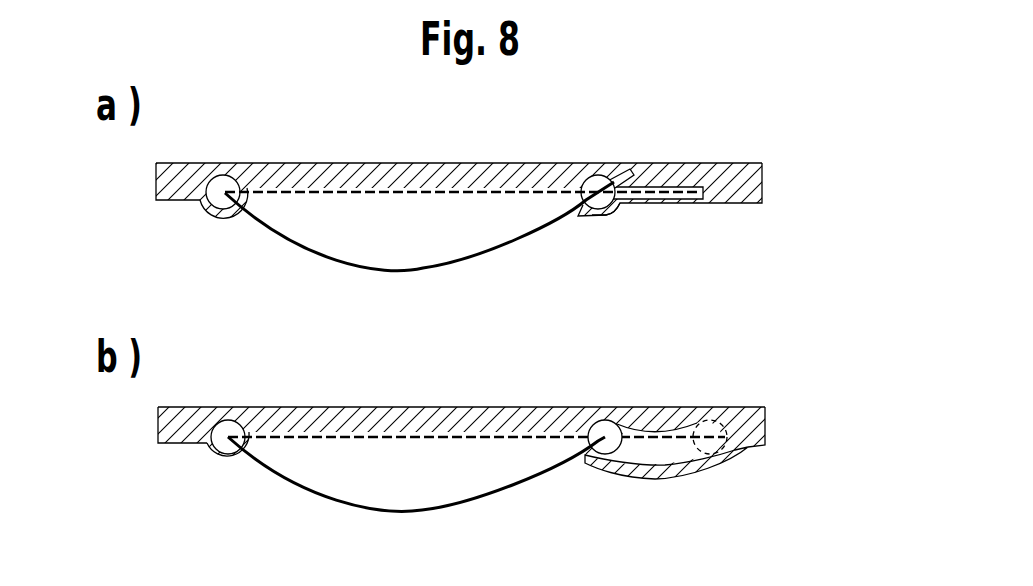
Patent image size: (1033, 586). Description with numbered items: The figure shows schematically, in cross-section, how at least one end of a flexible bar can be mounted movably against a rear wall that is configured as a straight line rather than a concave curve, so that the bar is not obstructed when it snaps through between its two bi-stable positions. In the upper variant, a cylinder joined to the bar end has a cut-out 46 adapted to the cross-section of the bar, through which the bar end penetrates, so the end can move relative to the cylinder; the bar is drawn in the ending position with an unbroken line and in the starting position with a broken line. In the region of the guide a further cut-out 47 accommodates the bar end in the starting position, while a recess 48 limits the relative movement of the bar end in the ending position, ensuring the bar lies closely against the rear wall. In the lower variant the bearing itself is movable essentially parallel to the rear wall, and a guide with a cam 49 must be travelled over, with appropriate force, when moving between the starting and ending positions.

The cut-out 46 is at (598, 176).
The cut-out 47 is at (688, 190).
The recess 48 is at (633, 171).
The cam 49 is at (662, 428).